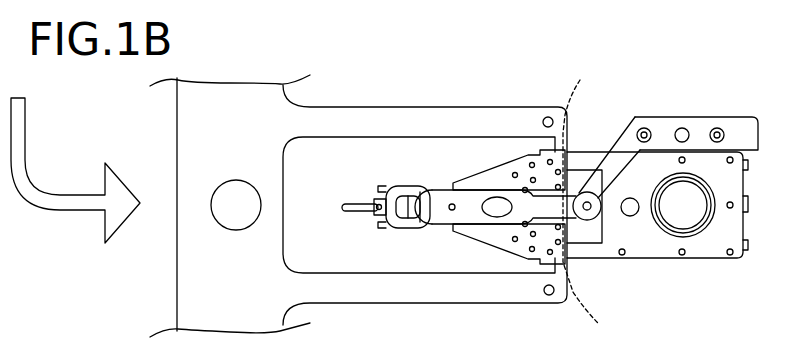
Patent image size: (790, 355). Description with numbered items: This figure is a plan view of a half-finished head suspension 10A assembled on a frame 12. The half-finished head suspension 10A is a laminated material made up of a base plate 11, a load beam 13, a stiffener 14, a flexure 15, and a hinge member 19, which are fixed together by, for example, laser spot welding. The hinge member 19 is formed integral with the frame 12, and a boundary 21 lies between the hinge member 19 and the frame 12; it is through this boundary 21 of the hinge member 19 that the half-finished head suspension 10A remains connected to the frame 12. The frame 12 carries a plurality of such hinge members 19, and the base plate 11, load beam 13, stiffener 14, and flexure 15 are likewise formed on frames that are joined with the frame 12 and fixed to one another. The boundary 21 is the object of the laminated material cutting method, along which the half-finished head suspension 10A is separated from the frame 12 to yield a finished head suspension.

The half-finished head suspension 10A is at (604, 132).
The base plate 11 is at (742, 255).
The frame 12 is at (348, 105).
The load beam 13 is at (493, 178).
The stiffener 14 is at (648, 235).
The flexure 15 is at (462, 227).
The hinge member 19 is at (545, 163).
The boundary 21 is at (590, 204).